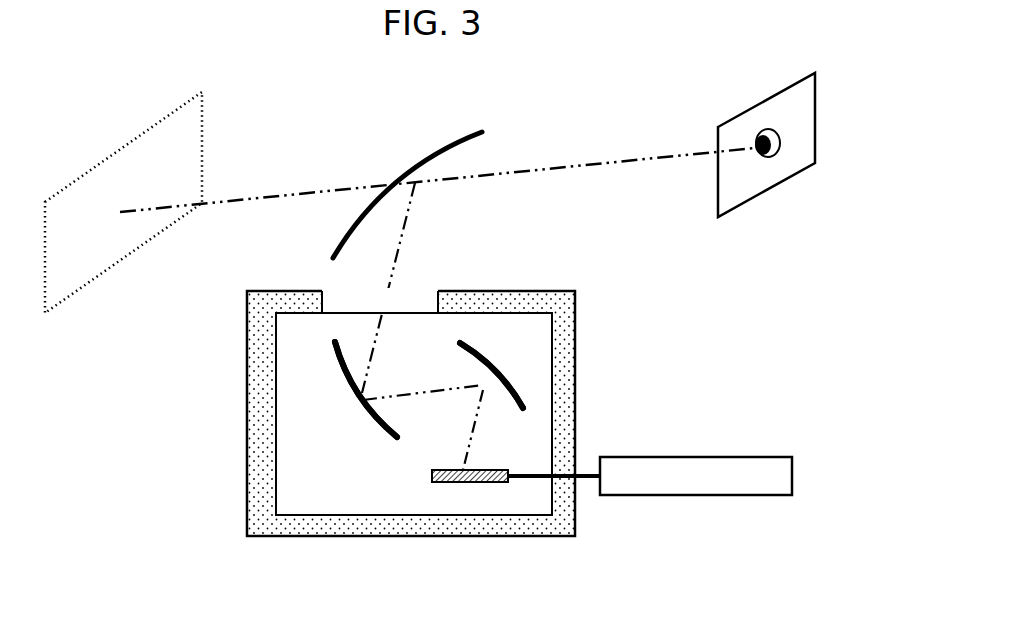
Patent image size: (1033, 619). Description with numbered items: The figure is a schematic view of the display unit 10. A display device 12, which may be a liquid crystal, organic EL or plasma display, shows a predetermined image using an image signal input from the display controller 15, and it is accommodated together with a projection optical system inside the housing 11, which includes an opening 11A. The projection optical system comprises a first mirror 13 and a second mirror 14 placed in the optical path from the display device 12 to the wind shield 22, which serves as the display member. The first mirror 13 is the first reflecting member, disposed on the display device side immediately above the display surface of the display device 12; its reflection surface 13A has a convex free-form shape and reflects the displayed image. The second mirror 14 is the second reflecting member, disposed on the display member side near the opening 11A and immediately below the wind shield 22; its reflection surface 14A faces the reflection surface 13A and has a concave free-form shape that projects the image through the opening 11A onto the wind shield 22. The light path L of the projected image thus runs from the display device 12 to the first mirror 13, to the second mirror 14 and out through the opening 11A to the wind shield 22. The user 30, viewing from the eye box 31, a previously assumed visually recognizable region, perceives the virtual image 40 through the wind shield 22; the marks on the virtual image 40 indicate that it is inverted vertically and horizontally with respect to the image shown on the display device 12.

The display unit 10 is at (484, 412).
The housing 11 is at (248, 363).
The opening 11A is at (323, 300).
The display device 12 is at (470, 482).
The first mirror 13 is at (517, 388).
The reflection surface 13A is at (503, 403).
The second mirror 14 is at (355, 424).
The reflection surface 14A is at (348, 370).
The display controller 15 is at (703, 457).
The wind shield 22 is at (437, 162).
The user 30 is at (763, 130).
The eye box 31 is at (792, 92).
The virtual image 40 is at (120, 180).
The display light L is at (437, 309).